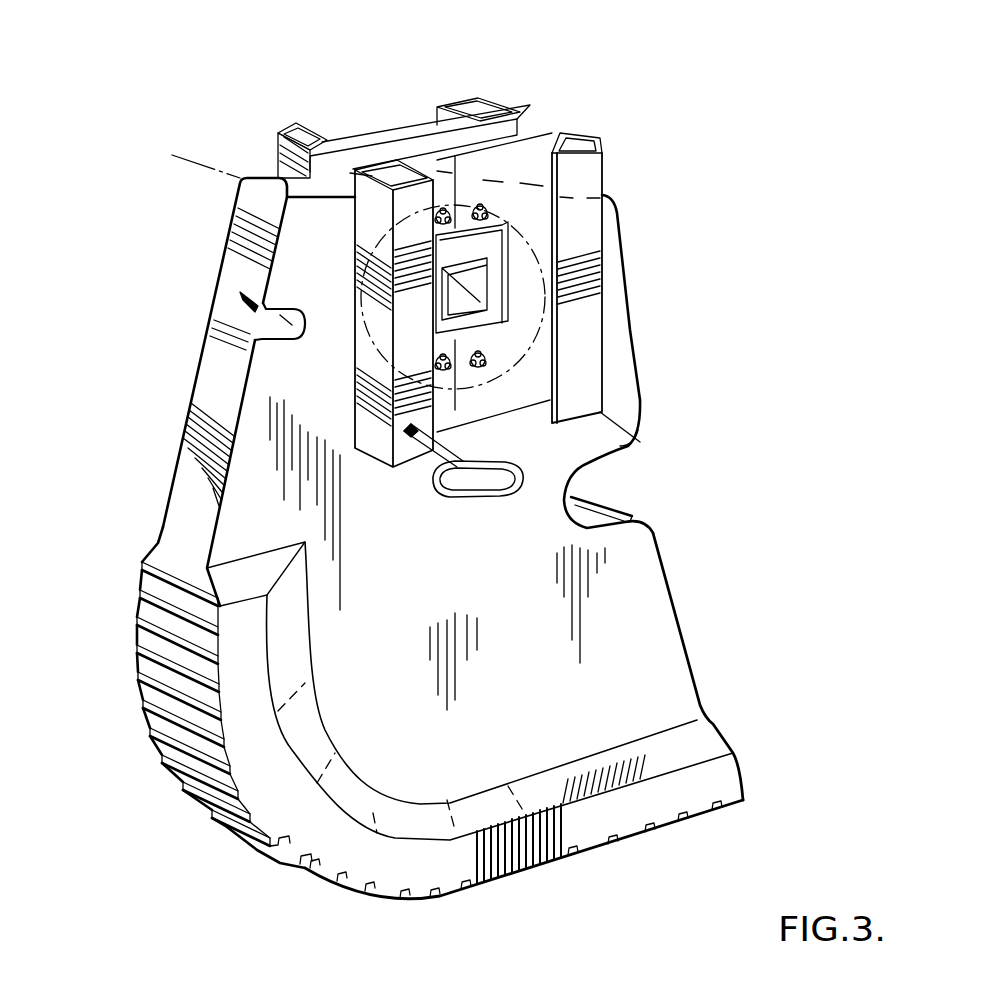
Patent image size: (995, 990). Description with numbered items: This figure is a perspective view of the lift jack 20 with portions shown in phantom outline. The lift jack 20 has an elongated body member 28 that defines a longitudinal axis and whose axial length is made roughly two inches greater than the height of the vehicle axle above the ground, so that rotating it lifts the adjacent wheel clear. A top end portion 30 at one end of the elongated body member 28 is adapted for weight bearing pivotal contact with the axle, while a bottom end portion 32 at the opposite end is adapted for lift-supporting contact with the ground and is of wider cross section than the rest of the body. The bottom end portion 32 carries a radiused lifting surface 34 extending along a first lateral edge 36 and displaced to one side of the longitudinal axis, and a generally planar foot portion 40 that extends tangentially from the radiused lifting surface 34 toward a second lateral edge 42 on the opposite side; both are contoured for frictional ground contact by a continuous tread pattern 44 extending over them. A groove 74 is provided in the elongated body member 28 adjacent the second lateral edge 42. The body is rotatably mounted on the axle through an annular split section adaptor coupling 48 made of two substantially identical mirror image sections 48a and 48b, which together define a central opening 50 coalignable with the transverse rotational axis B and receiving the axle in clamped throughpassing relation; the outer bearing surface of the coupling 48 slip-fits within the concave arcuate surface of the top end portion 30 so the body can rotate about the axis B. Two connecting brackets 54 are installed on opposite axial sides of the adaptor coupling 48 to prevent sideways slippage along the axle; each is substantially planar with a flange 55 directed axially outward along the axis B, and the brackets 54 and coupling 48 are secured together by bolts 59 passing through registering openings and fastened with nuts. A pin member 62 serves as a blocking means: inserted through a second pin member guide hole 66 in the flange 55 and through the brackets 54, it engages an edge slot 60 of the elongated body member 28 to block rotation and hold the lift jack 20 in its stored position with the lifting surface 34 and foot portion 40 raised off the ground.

The lift jack 20 is at (150, 487).
The elongated body member 28 is at (650, 638).
The top end portion 30 is at (333, 347).
The bottom end portion 32 is at (473, 785).
The radiused lifting surface 34 is at (170, 783).
The first lateral edge 36 is at (185, 527).
The foot portion 40 is at (573, 857).
The second lateral edge 42 is at (743, 767).
The continuous tread pattern 44 is at (177, 723).
The annular split section adaptor coupling 48 is at (775, 127).
The section 48a is at (508, 270).
The section 48b is at (487, 282).
The central opening 50 is at (502, 292).
The connecting bracket 54 is at (408, 167).
The flange 55 is at (592, 187).
The bolts 59 is at (632, 443).
The edge slot 60 is at (243, 303).
The pin member 62 is at (467, 495).
The second pin member guide hole 66 is at (403, 458).
The groove 74 is at (610, 487).
The transverse rotational axis B is at (540, 326).